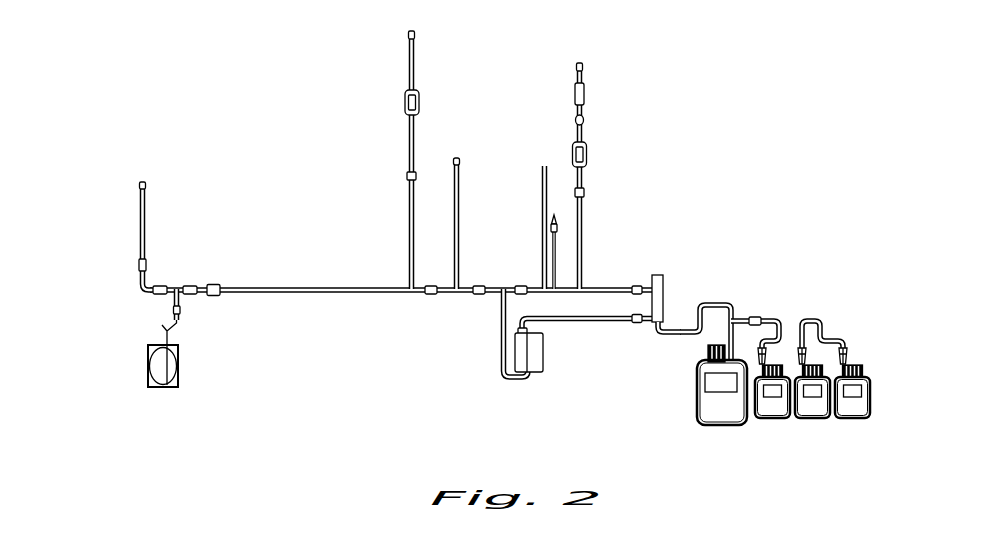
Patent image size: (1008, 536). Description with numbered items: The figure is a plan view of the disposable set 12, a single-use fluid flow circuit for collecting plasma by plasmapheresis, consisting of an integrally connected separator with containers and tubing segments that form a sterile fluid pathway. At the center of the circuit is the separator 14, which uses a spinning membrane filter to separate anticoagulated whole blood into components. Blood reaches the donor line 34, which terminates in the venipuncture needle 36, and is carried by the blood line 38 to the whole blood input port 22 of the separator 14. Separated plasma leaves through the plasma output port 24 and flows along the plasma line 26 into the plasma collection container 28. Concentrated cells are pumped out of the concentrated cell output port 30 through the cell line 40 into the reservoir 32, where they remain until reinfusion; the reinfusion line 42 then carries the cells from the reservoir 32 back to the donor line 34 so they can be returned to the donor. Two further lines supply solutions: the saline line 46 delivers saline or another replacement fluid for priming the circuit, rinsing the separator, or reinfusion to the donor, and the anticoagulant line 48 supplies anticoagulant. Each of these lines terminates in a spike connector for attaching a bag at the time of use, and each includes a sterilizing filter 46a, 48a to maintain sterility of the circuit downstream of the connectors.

The disposable set 12 is at (693, 102).
The separator 14 is at (664, 275).
The whole blood input port 22 is at (641, 285).
The plasma output port 24 is at (668, 328).
The plasma line 26 is at (686, 338).
The plasma collection container 28 is at (735, 413).
The concentrated cell output port 30 is at (640, 324).
The reservoir 32 is at (543, 368).
The donor line 34 is at (323, 294).
The venipuncture needle 36 is at (137, 182).
The blood line 38 is at (520, 285).
The cell line 40 is at (592, 324).
The reinfusion line 42 is at (500, 320).
The saline line 46 is at (575, 120).
The sterilizing filter 46a is at (588, 152).
The anticoagulant line 48 is at (409, 130).
The sterilizing filter 48a is at (406, 101).